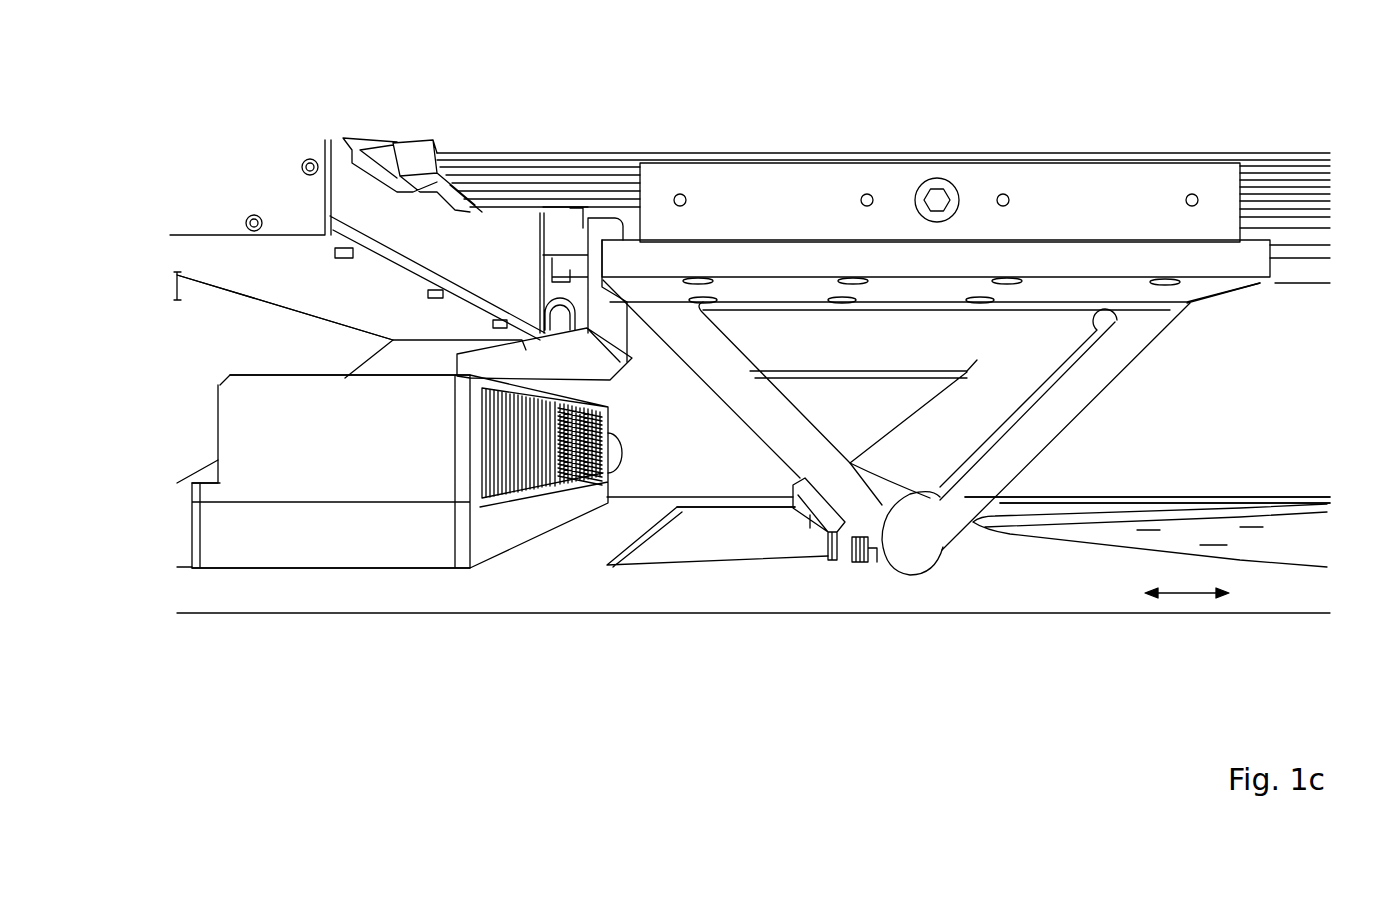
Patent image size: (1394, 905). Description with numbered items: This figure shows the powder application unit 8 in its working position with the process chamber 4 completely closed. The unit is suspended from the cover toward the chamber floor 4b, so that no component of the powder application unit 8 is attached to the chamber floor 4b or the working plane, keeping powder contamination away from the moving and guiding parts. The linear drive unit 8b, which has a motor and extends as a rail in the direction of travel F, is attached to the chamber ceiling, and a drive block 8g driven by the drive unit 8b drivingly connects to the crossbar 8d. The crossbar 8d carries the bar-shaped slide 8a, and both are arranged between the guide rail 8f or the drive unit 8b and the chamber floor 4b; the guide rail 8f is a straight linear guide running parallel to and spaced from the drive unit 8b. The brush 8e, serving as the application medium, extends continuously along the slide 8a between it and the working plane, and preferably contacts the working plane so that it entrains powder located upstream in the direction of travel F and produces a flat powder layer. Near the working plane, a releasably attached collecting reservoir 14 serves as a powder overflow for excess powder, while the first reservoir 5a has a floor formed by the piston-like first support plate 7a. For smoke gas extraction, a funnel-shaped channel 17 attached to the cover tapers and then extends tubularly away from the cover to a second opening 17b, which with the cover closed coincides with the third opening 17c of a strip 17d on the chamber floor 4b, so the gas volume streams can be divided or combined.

The process chamber 4 is at (1297, 320).
The chamber floor 4b is at (1068, 593).
The first reservoir 5a is at (1283, 530).
The first support plate 7a is at (1312, 540).
The powder application unit 8 is at (643, 137).
The slide 8a is at (840, 563).
The drive unit 8b is at (490, 148).
The crossbar 8d is at (1097, 373).
The brush 8e is at (862, 575).
The guide rail 8f is at (563, 250).
The drive block 8g is at (1080, 197).
The collecting reservoir 14 is at (657, 547).
The channel 17 is at (577, 353).
The second opening 17b is at (432, 367).
The third opening 17c is at (273, 323).
The strip 17d is at (350, 472).
The direction of travel F is at (1187, 597).